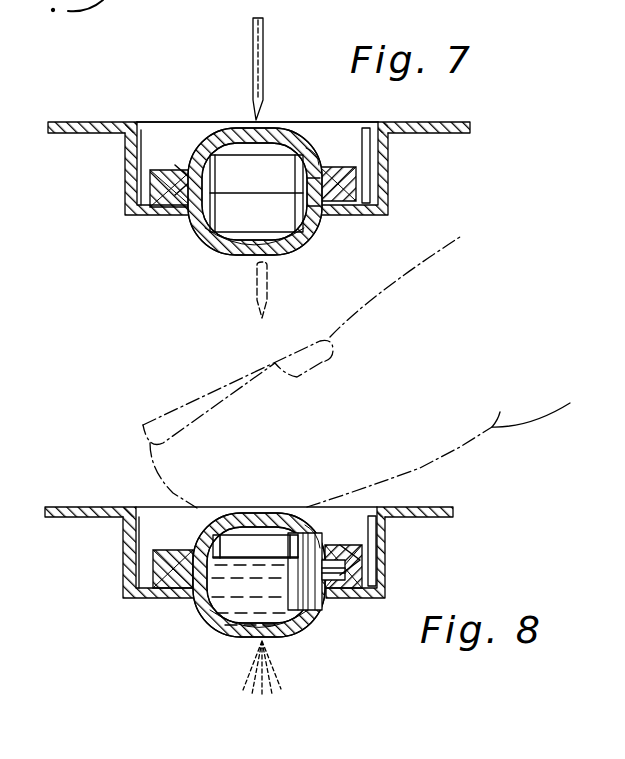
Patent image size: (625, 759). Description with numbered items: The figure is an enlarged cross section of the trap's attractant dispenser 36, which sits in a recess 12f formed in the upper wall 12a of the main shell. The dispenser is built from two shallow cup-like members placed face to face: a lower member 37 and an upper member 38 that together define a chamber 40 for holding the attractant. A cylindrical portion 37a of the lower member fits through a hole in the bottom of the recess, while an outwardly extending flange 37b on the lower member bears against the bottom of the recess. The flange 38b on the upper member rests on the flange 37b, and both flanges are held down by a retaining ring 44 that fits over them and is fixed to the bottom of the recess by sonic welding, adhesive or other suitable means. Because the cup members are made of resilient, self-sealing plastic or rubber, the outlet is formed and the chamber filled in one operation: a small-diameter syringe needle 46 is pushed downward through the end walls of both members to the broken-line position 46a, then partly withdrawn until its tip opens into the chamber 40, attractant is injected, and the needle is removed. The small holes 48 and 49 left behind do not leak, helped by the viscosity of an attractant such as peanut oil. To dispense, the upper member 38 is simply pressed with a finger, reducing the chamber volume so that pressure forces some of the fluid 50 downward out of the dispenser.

In FIG. 7, the upper wall 12a is at (455, 122).
In FIG. 8, the upper wall 12a is at (440, 507).
In FIG. 7, the recess 12f is at (390, 163).
In FIG. 8, the recess 12f is at (387, 548).
In FIG. 7, the attractant dispenser 36 is at (296, 120).
In FIG. 7, the lower cup-like member 37 is at (217, 253).
In FIG. 8, the lower cup-like member 37 is at (296, 635).
In FIG. 7, the cylindrical portion 37a is at (300, 251).
In FIG. 8, the cylindrical portion 37a is at (225, 635).
In FIG. 7, the flange 37b is at (333, 213).
In FIG. 8, the flange 37b is at (334, 596).
In FIG. 7, the upper cup-like member 38 is at (193, 148).
In FIG. 8, the upper cup-like member 38 is at (217, 510).
In FIG. 7, the flange 38b is at (180, 153).
In FIG. 8, the flange 38b is at (347, 547).
In FIG. 7, the chamber 40 is at (318, 159).
In FIG. 8, the chamber 40 is at (272, 543).
In FIG. 7, the retaining ring 44 is at (127, 181).
In FIG. 8, the retaining ring 44 is at (128, 566).
In FIG. 7, the needle 46 is at (263, 48).
In FIG. 7, the broken line position of needle 46a is at (255, 300).
In FIG. 8, the small hole 48 is at (272, 656).
In FIG. 8, the small hole 49 is at (257, 534).
In FIG. 8, the fluid 50 is at (255, 575).